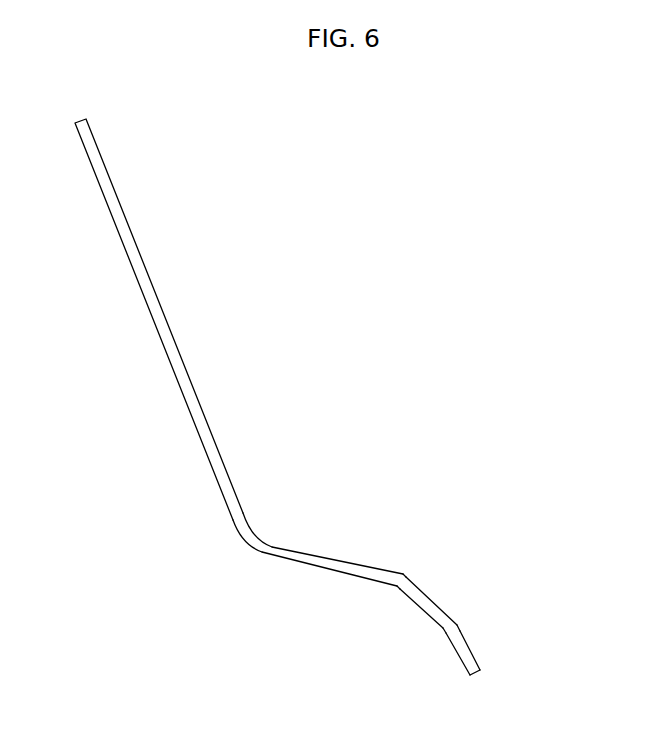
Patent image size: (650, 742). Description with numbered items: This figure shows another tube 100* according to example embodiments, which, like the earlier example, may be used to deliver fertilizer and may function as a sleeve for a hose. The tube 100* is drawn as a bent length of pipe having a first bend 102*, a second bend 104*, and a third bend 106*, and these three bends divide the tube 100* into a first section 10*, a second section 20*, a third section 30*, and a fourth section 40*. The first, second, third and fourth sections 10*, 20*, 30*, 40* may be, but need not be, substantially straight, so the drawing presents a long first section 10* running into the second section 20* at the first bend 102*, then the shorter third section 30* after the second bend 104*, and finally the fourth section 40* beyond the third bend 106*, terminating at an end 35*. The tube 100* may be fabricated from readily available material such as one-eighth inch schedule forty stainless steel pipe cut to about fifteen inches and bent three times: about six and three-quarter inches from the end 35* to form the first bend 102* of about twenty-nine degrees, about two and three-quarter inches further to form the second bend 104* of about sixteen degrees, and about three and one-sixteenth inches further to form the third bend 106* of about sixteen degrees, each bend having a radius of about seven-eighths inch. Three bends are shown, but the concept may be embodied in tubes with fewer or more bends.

The first section 10 is at (154, 314).
The second section 20 is at (322, 557).
The third section 30 is at (422, 608).
The end 35 is at (464, 675).
The fourth section 40 is at (474, 656).
The tube 100 is at (317, 419).
The first bend 102 is at (492, 613).
The second bend 104 is at (433, 560).
The third bend 106 is at (218, 572).